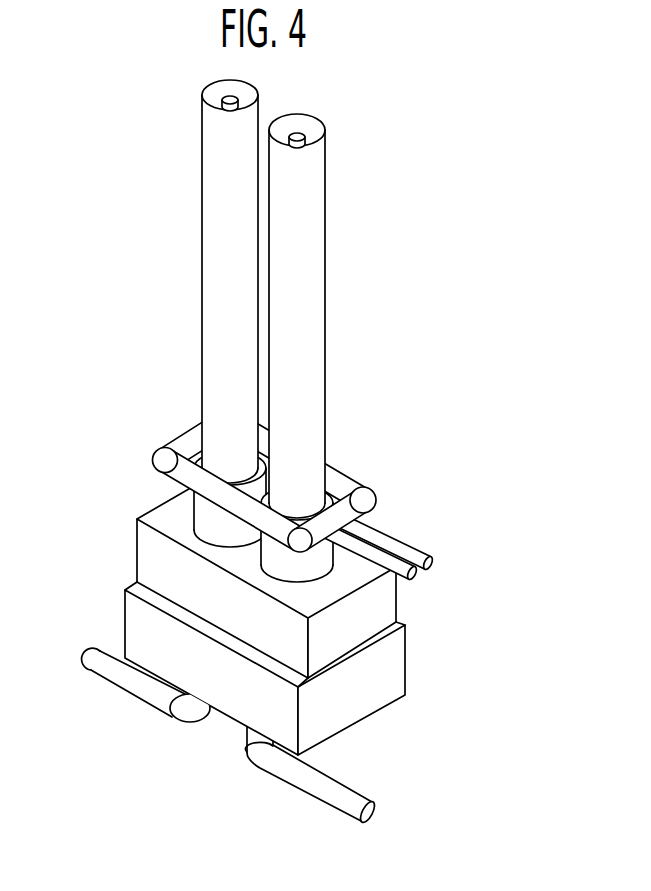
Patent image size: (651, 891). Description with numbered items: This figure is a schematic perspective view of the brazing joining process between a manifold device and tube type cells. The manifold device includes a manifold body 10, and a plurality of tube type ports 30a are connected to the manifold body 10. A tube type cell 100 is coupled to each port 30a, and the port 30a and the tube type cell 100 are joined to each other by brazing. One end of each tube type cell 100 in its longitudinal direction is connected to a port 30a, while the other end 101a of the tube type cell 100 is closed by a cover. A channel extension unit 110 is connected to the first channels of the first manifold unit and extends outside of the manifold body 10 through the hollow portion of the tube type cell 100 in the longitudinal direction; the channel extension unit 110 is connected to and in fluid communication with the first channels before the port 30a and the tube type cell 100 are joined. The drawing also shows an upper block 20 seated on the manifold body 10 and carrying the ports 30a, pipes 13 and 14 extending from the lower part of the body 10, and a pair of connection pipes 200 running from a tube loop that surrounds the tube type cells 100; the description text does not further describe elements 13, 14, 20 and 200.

The manifold body 10 is at (402, 667).
The inlet pipe 13 is at (134, 690).
The outlet pipe 14 is at (321, 793).
The upper block / mounting body 20 is at (124, 524).
The tube type port 30a is at (323, 557).
The tube type cell 100 is at (326, 368).
The channel extension unit 110 is at (297, 133).
The other end of the tube type cell 101a is at (313, 127).
The connection pipes 200 is at (389, 541).